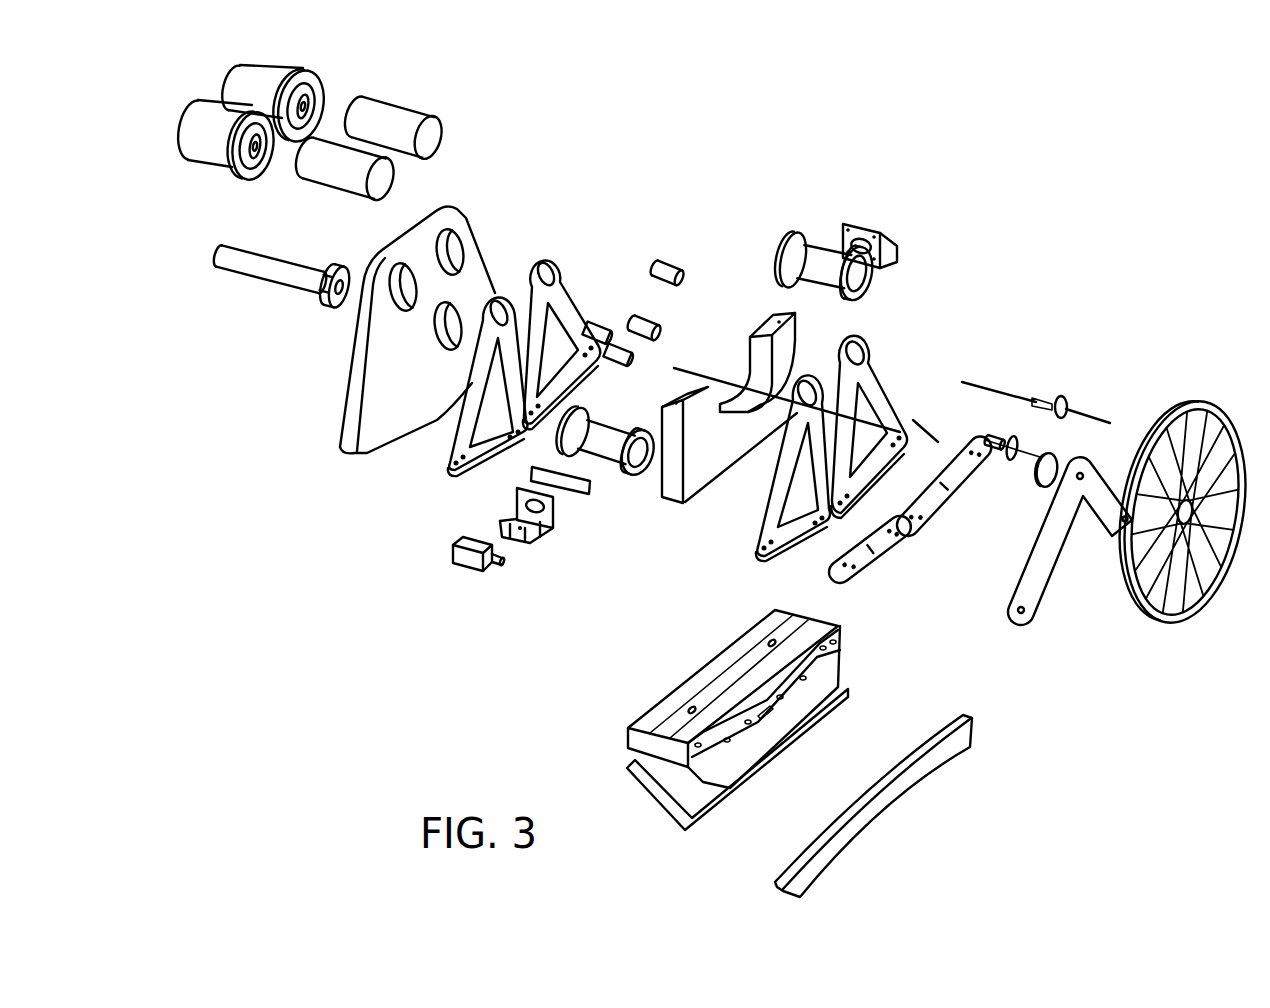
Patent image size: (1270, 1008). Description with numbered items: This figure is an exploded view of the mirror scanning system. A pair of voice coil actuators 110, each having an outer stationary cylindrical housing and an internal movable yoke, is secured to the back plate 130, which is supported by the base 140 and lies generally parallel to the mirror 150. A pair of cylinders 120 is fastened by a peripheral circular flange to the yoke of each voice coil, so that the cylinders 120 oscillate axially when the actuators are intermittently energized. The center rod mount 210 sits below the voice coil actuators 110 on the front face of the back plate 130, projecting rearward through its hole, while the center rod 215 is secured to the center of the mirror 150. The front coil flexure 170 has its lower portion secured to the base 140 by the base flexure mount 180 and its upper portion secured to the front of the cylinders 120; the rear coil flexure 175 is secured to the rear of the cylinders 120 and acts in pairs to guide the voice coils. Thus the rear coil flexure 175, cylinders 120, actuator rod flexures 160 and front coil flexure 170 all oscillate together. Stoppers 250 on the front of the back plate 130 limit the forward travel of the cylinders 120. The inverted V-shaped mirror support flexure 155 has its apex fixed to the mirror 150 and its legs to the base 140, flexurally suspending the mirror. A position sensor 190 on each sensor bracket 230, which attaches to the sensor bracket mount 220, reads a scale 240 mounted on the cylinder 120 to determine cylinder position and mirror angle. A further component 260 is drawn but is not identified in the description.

The voice coil actuators 110 is at (451, 108).
The cylinders 120 is at (801, 234).
The back plate 130 is at (470, 230).
The base 140 is at (647, 794).
The mirror 150 is at (1200, 400).
The mirror support flexure 155 is at (1022, 618).
The actuator rod flexures 160 is at (1012, 392).
The front coil flexure 170 is at (883, 385).
The rear coil flexure 175 is at (557, 250).
The base flexure mount 180 is at (935, 783).
The position sensor 190 is at (476, 575).
The center rod mount 210 is at (263, 284).
The center rod 215 is at (676, 366).
The sensor bracket mount 220 is at (680, 505).
The sensor bracket 230 is at (892, 241).
The scale 240 is at (587, 490).
The stoppers 250 is at (667, 263).
The link arm 260 is at (893, 552).